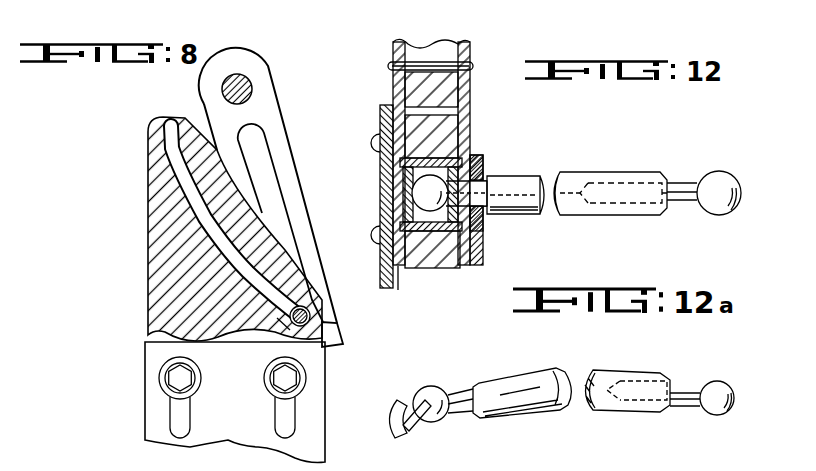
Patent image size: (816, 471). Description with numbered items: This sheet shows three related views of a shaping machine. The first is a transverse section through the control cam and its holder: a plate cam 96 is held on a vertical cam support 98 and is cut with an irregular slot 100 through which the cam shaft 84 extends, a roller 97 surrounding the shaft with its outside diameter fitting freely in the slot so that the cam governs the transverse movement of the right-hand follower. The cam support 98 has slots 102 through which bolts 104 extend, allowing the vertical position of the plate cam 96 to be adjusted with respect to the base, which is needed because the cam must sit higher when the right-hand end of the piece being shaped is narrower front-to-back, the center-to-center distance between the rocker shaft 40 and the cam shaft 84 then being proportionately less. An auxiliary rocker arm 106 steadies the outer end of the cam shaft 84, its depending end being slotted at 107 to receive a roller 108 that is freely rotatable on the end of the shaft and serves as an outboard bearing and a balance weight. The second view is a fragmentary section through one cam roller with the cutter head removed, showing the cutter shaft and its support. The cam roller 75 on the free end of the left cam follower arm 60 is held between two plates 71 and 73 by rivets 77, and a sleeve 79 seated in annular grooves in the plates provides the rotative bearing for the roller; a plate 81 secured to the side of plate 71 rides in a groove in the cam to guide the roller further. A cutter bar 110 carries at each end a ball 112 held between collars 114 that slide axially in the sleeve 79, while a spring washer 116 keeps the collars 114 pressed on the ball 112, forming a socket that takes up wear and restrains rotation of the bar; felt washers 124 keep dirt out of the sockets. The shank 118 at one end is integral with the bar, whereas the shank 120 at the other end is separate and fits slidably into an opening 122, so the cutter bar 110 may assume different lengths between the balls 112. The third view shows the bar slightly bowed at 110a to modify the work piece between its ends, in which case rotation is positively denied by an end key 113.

In FIG. 8, the rocker shaft 40 is at (254, 88).
In FIG. 12, the left cam follower arm 60 is at (440, 46).
In FIG. 12, the plate 71 is at (398, 268).
In FIG. 12, the plate 73 is at (476, 257).
In FIG. 12, the cam roller 75 is at (457, 266).
In FIG. 12, the rivets 77 is at (388, 66).
In FIG. 12, the sleeve 79 is at (446, 154).
In FIG. 12, the plate 81 is at (383, 277).
In FIG. 8, the cam shaft 84 is at (310, 316).
In FIG. 8, the plate cam 96 is at (150, 178).
In FIG. 8, the roller 97 is at (340, 337).
In FIG. 8, the cam support 98 is at (150, 375).
In FIG. 8, the irregular slot 100 is at (190, 106).
In FIG. 8, the slots 102 is at (282, 415).
In FIG. 8, the bolts 104 is at (172, 372).
In FIG. 8, the auxiliary rocker arm 106 is at (268, 185).
In FIG. 8, the slot 107 is at (272, 210).
In FIG. 8, the roller 108 is at (277, 318).
In FIG. 12, the cutter bar 110 is at (610, 193).
In FIG. 12A, the bowed cutter bar 110a is at (537, 420).
In FIG. 12, the ball 112 is at (418, 196).
In FIG. 12A, the ball 112 is at (436, 424).
In FIG. 12A, the end key 113 is at (403, 437).
In FIG. 12, the collars 114 is at (378, 170).
In FIG. 12, the spring washer 116 is at (398, 168).
In FIG. 12, the shank 118 is at (485, 216).
In FIG. 12A, the shank 118 is at (458, 392).
In FIG. 12, the shank 120 is at (676, 201).
In FIG. 12A, the shank 120 is at (686, 390).
In FIG. 12, the opening 122 is at (583, 206).
In FIG. 12A, the opening 122 is at (618, 378).
In FIG. 12, the felt washers 124 is at (483, 172).